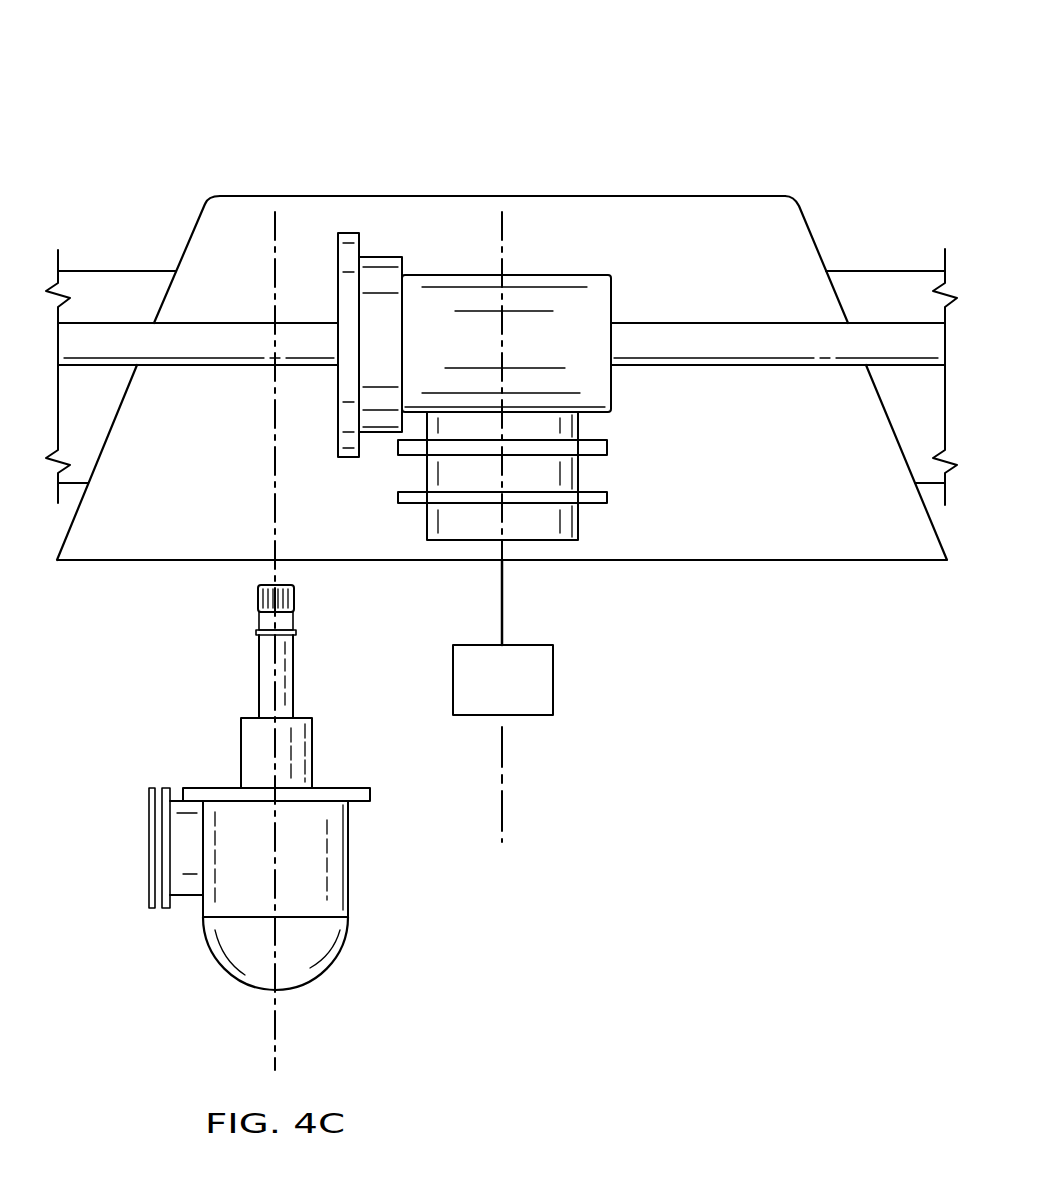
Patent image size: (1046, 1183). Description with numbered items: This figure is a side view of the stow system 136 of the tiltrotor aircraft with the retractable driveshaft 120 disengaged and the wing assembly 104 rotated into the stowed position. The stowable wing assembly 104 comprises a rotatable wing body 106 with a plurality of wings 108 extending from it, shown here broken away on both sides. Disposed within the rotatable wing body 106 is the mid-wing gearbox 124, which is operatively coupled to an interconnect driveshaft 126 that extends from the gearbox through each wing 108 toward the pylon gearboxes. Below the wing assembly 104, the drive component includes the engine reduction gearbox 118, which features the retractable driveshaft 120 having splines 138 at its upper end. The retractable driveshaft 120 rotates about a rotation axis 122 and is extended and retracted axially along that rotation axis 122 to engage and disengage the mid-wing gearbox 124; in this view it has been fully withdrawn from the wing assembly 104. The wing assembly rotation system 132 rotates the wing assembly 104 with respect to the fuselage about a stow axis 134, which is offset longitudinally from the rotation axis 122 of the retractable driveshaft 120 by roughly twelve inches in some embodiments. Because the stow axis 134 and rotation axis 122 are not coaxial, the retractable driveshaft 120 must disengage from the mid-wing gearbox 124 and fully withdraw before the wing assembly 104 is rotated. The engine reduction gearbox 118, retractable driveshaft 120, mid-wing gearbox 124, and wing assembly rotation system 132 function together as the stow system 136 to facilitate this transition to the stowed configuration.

The stow system 136 is at (243, 62).
The stowable wing assembly 104 is at (738, 182).
The rotatable wing body 106 is at (594, 195).
The wings 108 is at (118, 271).
The interconnect driveshaft 126 is at (236, 323).
The mid-wing gearbox 124 is at (558, 275).
The stow axis 134 is at (504, 827).
The wing assembly rotation system 132 is at (553, 680).
The rotation axis 122 is at (277, 1052).
The splines 138 is at (294, 598).
The retractable driveshaft 120 is at (293, 670).
The engine reduction gearbox 118 is at (348, 858).